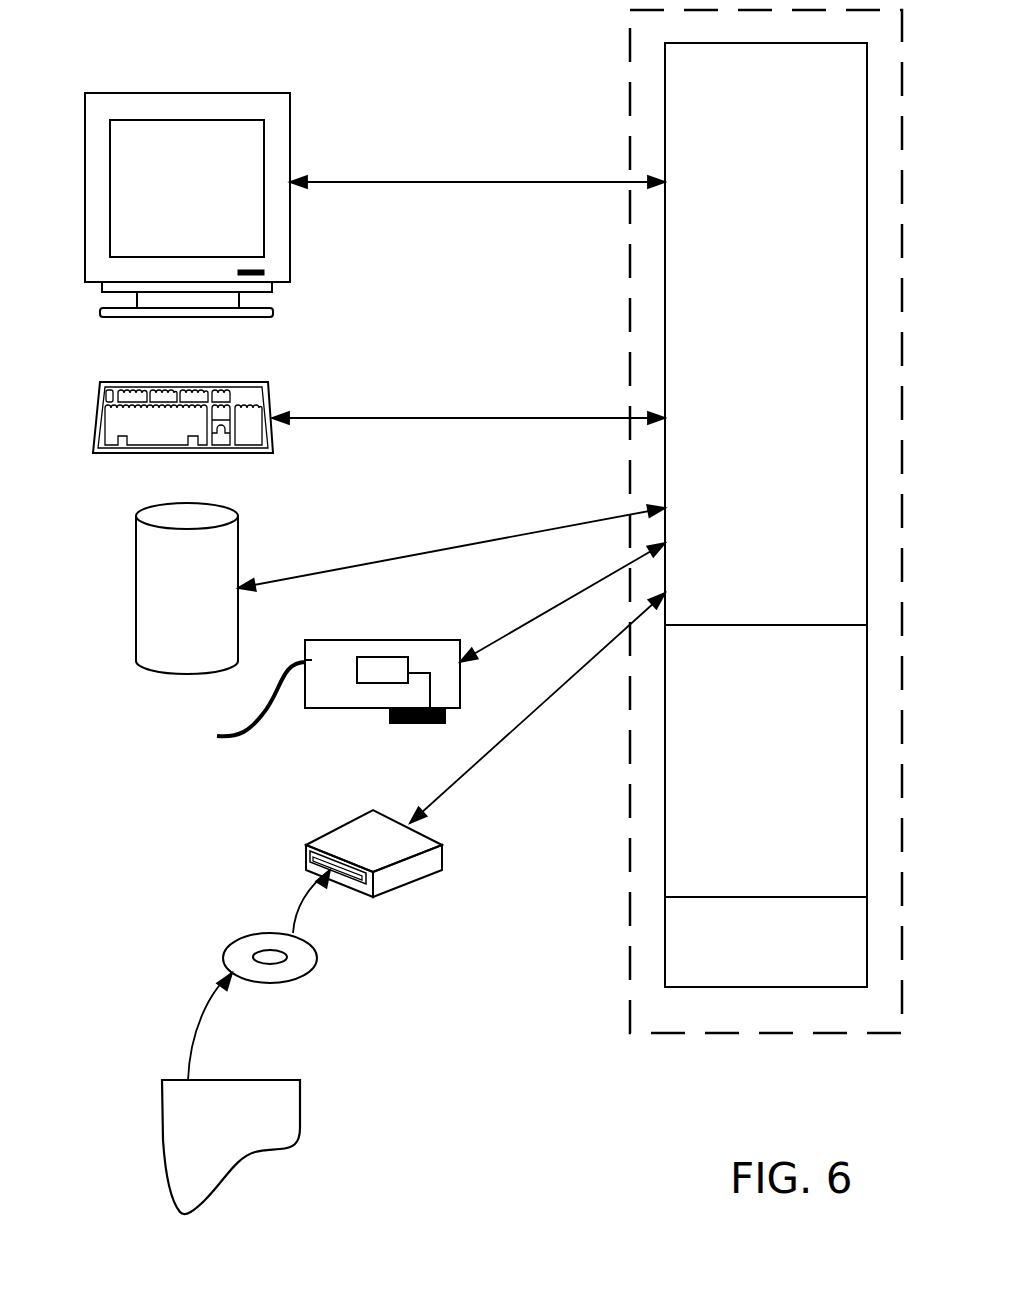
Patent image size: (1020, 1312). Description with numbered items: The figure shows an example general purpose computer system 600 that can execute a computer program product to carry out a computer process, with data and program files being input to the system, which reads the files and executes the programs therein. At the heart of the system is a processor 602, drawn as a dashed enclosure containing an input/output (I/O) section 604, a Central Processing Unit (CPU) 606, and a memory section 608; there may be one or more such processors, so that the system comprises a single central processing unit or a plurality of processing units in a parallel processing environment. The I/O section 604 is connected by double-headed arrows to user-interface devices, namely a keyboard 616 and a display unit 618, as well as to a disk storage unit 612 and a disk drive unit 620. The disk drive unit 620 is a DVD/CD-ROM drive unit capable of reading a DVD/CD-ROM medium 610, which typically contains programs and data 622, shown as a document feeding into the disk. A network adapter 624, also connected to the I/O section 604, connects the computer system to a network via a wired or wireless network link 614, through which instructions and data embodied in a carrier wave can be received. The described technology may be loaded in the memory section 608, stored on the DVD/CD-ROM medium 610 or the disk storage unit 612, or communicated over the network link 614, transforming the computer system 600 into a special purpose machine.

The general purpose computer system 600 is at (537, 1072).
The processor 602 is at (628, 78).
The input/output (I/O) section 604 is at (785, 361).
The central processing unit (CPU) 606 is at (785, 783).
The memory section 608 is at (785, 967).
The DVD/CD-ROM medium 610 is at (238, 937).
The disk storage unit 612 is at (136, 537).
The network link 614 is at (242, 737).
The keyboard 616 is at (140, 382).
The display unit 618 is at (152, 93).
The disk drive unit 620 is at (357, 843).
The programs and data 622 is at (300, 1103).
The network adapter 624 is at (353, 708).